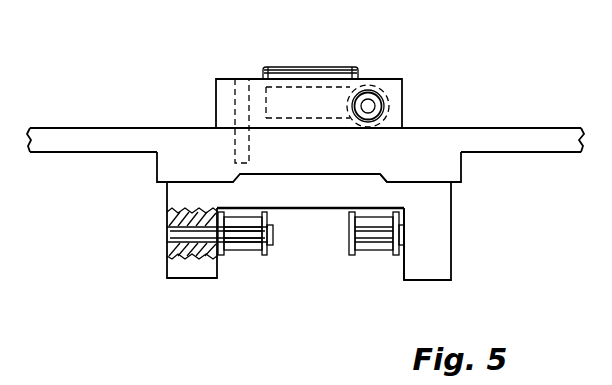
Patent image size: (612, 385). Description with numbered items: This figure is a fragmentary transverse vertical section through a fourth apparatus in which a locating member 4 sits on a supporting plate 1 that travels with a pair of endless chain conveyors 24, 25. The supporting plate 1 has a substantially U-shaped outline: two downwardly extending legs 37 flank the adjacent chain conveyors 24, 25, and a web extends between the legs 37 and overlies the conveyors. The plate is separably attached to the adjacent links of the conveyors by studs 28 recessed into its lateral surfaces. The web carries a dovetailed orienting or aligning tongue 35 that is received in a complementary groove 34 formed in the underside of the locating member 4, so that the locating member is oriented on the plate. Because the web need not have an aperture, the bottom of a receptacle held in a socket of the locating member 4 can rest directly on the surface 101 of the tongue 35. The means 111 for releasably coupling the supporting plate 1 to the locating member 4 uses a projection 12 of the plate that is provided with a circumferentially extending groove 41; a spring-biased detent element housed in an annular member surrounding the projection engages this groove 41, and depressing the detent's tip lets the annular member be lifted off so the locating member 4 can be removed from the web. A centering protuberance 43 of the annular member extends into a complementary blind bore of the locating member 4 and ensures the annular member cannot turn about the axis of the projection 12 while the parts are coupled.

The supporting plate 1 is at (443, 253).
The locating member 4 is at (85, 135).
The projection 12 is at (328, 65).
The chain conveyor 24 is at (250, 242).
The chain conveyor 25 is at (378, 243).
The stud 28 is at (177, 233).
The groove 34 is at (380, 177).
The tongue 35 is at (362, 182).
The leg 37 is at (443, 197).
The circumferentially extending groove 41 is at (278, 100).
The centering protuberance 43 is at (238, 103).
The surface 101 is at (280, 174).
The coupling means 111 is at (386, 70).